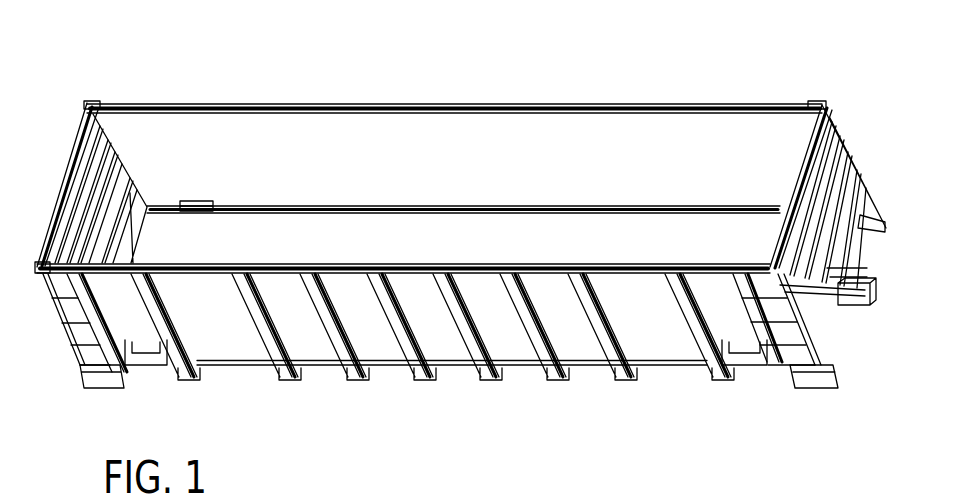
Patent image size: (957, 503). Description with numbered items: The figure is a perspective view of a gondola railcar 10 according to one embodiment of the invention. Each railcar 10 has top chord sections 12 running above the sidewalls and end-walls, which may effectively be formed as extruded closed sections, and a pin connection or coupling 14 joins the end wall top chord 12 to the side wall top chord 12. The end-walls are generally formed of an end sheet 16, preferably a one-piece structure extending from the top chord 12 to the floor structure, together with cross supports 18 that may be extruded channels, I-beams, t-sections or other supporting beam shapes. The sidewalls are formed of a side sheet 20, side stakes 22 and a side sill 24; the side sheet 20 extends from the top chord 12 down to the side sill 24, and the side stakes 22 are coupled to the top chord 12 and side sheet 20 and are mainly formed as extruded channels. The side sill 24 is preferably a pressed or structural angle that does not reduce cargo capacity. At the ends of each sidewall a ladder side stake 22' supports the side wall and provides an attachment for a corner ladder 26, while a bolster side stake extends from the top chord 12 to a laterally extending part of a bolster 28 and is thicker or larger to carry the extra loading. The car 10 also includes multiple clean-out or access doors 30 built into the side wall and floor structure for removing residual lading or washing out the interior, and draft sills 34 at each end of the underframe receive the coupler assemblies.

The gondola railcar 10 is at (476, 80).
The top chord section 12 is at (236, 104).
The pin connection or coupling 14 is at (87, 101).
The end sheet 16 is at (80, 185).
The cross supports 18 is at (845, 140).
The side sheet 20 is at (500, 140).
The side stake 22 is at (434, 369).
The ladder side stake 22' is at (432, 357).
The side sill 24 is at (353, 204).
The corner ladder 26 is at (82, 373).
The bolster 28 is at (203, 364).
The clean-out door 30 is at (196, 198).
The draft sill 34 is at (862, 312).